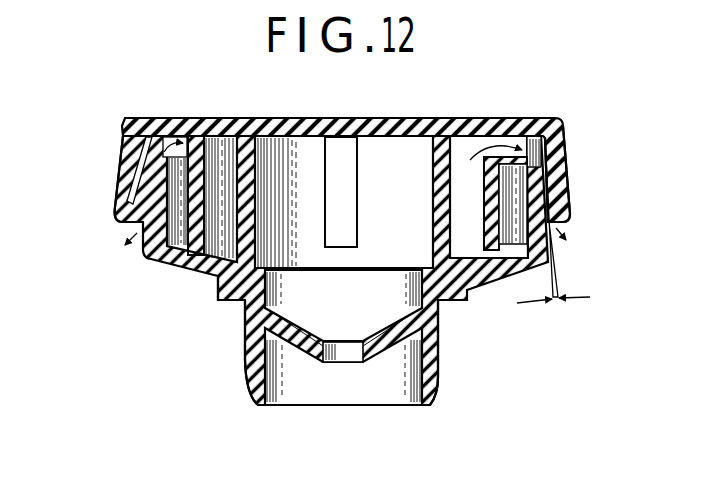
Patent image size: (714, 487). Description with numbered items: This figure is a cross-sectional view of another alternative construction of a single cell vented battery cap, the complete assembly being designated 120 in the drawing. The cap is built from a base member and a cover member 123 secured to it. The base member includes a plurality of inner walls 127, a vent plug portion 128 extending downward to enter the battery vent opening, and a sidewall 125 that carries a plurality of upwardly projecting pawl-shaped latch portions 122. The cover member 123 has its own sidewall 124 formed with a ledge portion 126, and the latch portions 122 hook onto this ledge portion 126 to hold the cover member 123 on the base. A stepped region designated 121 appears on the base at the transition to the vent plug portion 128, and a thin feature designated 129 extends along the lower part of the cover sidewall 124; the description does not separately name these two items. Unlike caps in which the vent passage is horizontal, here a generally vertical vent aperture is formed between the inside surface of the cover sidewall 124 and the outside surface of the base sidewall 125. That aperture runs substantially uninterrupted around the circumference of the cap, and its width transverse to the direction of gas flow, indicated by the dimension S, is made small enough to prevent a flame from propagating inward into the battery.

The closure cap 120 is at (500, 110).
The shoulder 121 is at (218, 291).
The latch portions 122 is at (116, 221).
The cover member 123 is at (345, 117).
The sidewall 124 is at (565, 194).
The sidewall 125 is at (547, 245).
The ledge portion 126 is at (138, 182).
The inner walls 127 is at (196, 204).
The vent plug portion 128 is at (246, 370).
The thin skirt extension 129 is at (550, 210).
The gap spacing S is at (553, 311).